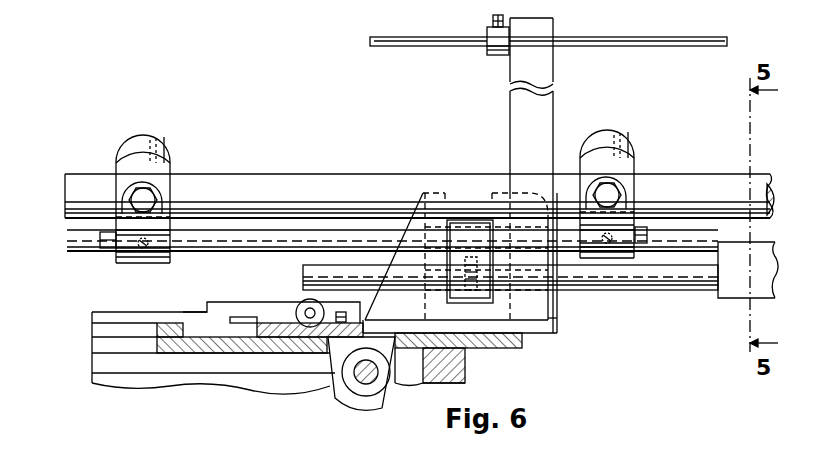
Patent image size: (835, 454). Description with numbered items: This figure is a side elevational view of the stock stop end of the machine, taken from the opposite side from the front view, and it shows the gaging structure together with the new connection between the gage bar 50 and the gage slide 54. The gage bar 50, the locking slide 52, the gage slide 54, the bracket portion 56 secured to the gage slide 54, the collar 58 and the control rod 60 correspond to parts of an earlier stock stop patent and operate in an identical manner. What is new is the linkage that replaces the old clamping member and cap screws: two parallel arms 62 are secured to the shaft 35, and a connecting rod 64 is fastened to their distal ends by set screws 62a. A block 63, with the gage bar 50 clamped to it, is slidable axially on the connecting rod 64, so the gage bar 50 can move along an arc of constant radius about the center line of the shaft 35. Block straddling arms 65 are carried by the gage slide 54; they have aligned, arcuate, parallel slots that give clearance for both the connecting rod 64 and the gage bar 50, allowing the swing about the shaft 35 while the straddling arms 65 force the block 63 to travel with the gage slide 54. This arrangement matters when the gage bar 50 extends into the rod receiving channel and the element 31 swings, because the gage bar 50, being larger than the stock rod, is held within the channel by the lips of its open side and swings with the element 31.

The element 31 is at (772, 230).
The shaft 35 is at (243, 183).
The gage bar 50 is at (655, 284).
The locking slide 52 is at (233, 348).
The gage slide 54 is at (265, 321).
The bracket portion 56 is at (553, 118).
The collar 58 is at (491, 53).
The control rod 60 is at (414, 47).
The parallel arms 62 is at (159, 138).
The set screws 62a is at (152, 253).
The block 63 is at (460, 258).
The connecting rod 64 is at (100, 241).
The block straddling arms 65 is at (405, 257).